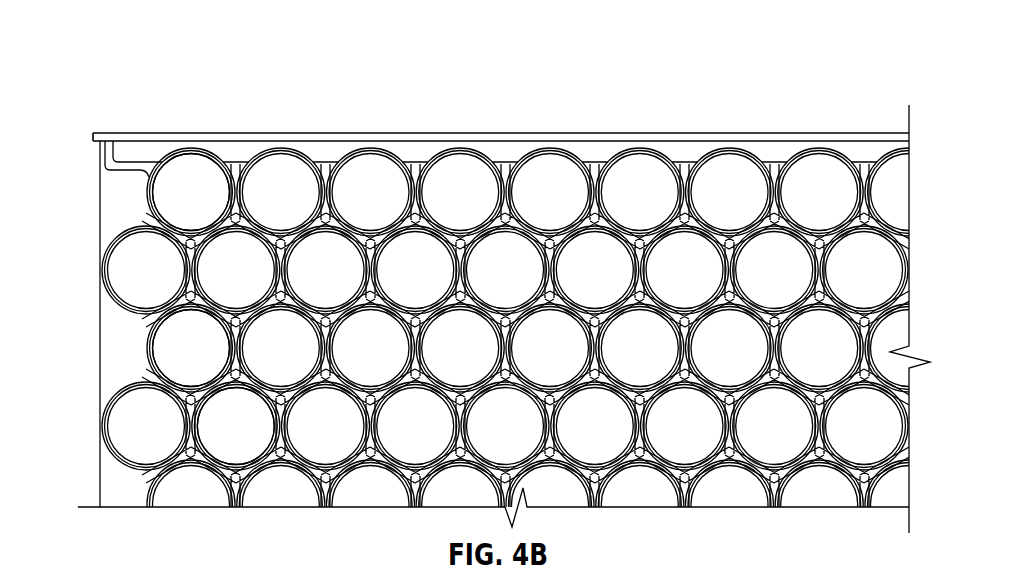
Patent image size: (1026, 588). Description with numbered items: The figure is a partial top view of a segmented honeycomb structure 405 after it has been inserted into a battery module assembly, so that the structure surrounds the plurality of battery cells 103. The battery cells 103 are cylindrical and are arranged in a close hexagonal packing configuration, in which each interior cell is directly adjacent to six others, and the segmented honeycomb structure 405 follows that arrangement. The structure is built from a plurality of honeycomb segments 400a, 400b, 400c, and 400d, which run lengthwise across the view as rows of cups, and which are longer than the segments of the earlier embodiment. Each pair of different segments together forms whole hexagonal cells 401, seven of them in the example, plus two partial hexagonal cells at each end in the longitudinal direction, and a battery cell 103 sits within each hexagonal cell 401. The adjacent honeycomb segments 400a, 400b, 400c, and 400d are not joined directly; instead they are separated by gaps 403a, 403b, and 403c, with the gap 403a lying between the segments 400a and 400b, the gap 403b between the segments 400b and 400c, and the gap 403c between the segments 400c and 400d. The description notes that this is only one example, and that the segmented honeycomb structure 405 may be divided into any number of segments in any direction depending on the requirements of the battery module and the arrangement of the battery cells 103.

The segmented honeycomb structure 405 is at (117, 38).
The battery cells 103 is at (188, 165).
The hexagonal cells 401 is at (247, 230).
The honeycomb segment 400a is at (157, 223).
The gap 403a is at (178, 273).
The honeycomb segment 400b is at (150, 325).
The gap 403b is at (235, 345).
The honeycomb segment 400c is at (147, 376).
The gap 403c is at (190, 427).
The honeycomb segment 400d is at (173, 460).